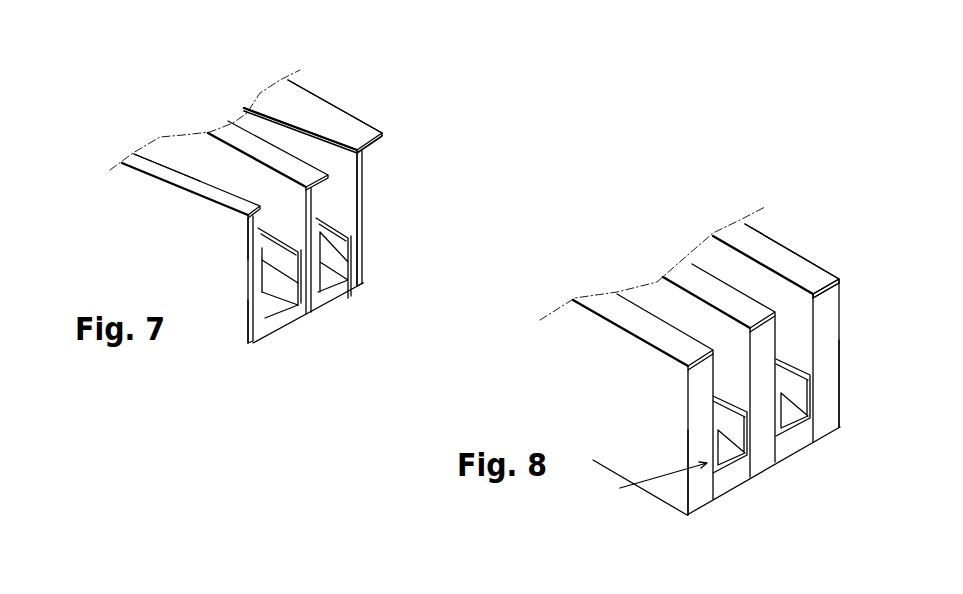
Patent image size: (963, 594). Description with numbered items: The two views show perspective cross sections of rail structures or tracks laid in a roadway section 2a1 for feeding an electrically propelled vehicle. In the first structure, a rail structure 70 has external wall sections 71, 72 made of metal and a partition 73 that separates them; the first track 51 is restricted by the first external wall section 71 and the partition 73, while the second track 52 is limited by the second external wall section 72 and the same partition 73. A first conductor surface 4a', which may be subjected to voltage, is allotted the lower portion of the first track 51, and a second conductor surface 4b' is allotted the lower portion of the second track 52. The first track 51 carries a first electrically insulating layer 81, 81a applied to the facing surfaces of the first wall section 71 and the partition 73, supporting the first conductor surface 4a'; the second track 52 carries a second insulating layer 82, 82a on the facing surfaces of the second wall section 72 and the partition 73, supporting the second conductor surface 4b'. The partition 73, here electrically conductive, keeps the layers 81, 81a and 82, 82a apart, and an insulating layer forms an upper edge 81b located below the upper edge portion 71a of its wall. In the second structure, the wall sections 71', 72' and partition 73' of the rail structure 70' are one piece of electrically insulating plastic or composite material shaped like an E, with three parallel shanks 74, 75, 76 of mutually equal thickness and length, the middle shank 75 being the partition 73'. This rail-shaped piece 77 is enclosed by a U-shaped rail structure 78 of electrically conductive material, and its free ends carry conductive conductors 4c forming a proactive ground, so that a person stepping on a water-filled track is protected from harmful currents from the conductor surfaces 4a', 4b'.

In FIG. 7, the electrically conductive conductor 4c is at (343, 122).
In FIG. 8, the electrically conductive conductor 4c is at (608, 298).
In FIG. 7, the roadway section 2a1 is at (335, 100).
In FIG. 8, the roadway section 2a1 is at (792, 240).
In FIG. 7, the second insulating layer 82 is at (247, 112).
In FIG. 7, the rail structure 70 is at (406, 211).
In FIG. 7, the second external wall section 72 is at (406, 228).
In FIG. 7, the second track 52 is at (337, 202).
In FIG. 7, the second insulating layer 82a is at (350, 210).
In FIG. 7, the U-shaped rail structure 78 is at (362, 275).
In FIG. 8, the U-shaped rail structure 78 is at (713, 513).
In FIG. 7, the second conductor surface 4b' is at (342, 281).
In FIG. 8, the second conductor surface 4b' is at (840, 397).
In FIG. 7, the partition 73 is at (236, 194).
In FIG. 7, the first conductor surface 4a' is at (288, 300).
In FIG. 8, the first conductor surface 4a' is at (743, 458).
In FIG. 7, the first track 51 is at (278, 245).
In FIG. 7, the upper edge 81b is at (177, 153).
In FIG. 7, the upper edge portion 71a is at (197, 170).
In FIG. 7, the first external wall section 71 is at (181, 279).
In FIG. 7, the first insulating layer 81a is at (246, 218).
In FIG. 7, the first insulating layer 81 is at (255, 275).
In FIG. 8, the rail structure 70' is at (848, 257).
In FIG. 8, the shank 76 is at (830, 307).
In FIG. 8, the second external wall section 72' is at (874, 375).
In FIG. 8, the shank 74 is at (690, 395).
In FIG. 8, the first external wall section 71' is at (643, 463).
In FIG. 8, the shank 75 is at (765, 428).
In FIG. 8, the partition 73' is at (820, 439).
In FIG. 8, the rail-shaped piece 77 is at (646, 483).